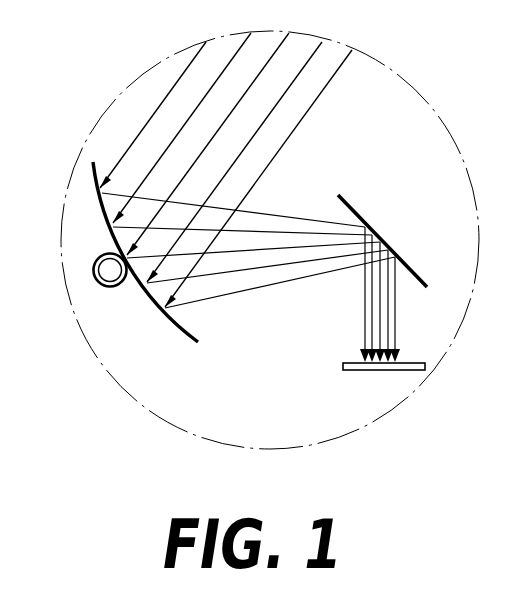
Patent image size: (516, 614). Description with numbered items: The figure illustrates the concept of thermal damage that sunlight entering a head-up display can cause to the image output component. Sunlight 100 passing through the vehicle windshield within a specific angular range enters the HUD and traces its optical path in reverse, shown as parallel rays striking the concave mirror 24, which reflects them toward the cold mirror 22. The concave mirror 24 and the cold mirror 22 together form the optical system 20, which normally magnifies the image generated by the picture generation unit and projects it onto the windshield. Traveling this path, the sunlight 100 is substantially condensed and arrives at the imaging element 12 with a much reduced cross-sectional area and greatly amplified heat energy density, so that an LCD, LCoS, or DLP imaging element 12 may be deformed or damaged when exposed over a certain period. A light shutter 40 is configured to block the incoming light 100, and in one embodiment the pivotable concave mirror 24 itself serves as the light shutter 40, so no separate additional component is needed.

The sunlight 100 is at (312, 105).
The optical system 20 is at (260, 276).
The concave mirror 24 is at (183, 322).
The cold mirror 22 is at (407, 268).
The imaging element 12 is at (413, 363).
The light shutter 40 is at (88, 284).